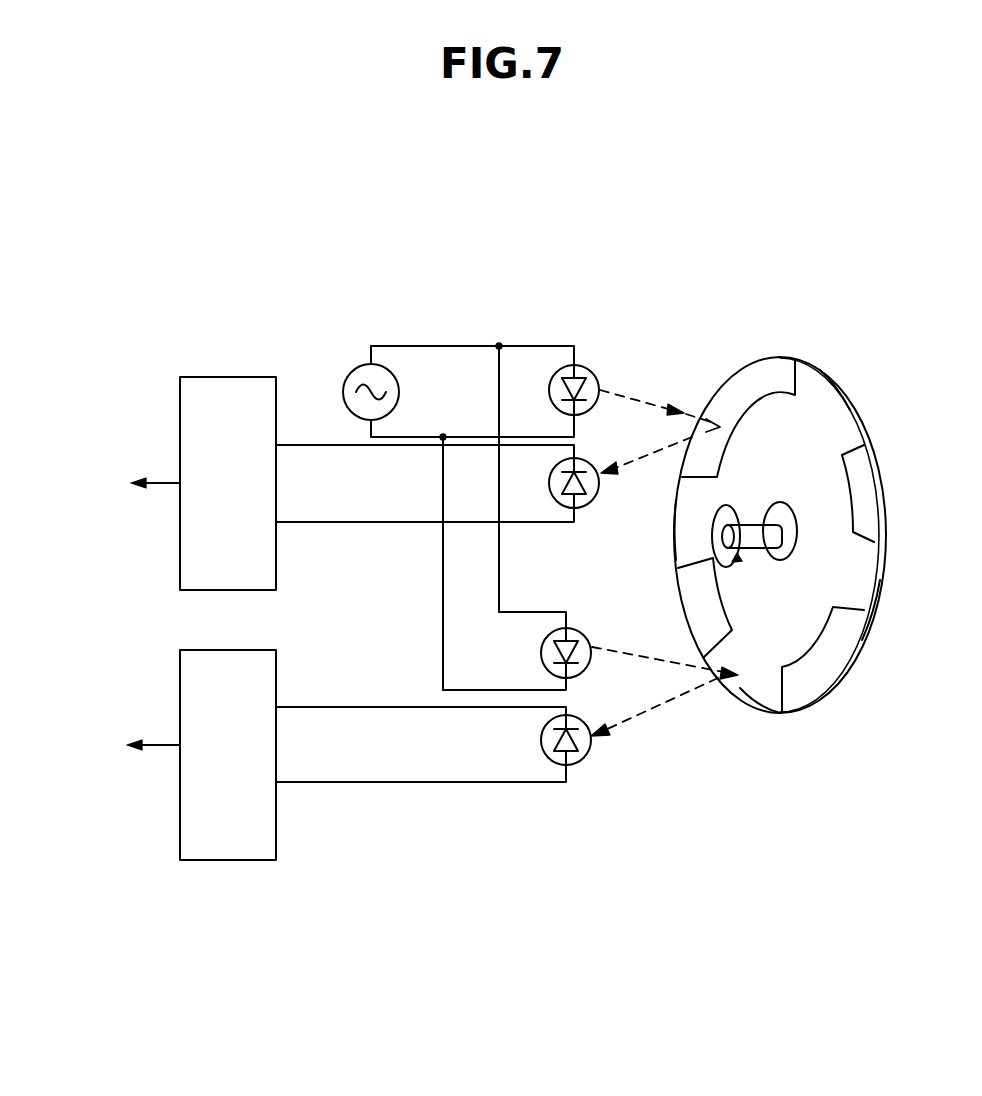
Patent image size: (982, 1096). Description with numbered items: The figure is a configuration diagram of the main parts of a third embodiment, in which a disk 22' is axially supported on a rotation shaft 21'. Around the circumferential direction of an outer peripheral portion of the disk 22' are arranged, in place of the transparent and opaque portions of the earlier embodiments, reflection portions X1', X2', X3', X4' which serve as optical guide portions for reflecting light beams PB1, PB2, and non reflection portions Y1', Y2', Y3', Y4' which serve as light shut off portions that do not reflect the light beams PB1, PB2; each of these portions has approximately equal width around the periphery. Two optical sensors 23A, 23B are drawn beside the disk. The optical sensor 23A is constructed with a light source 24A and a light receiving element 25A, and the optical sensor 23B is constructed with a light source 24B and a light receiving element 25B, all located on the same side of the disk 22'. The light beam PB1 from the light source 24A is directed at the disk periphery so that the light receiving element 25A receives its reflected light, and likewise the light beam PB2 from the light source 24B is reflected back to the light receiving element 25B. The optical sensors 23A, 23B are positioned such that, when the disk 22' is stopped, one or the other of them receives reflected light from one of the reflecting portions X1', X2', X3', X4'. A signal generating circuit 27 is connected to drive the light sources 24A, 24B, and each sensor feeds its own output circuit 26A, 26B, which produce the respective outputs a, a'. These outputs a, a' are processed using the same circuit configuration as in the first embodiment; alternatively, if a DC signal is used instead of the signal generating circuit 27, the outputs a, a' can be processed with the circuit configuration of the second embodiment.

The optical sensor 23A is at (303, 388).
The optical sensor 23B is at (362, 794).
The output circuit 26A is at (221, 377).
The output circuit 26B is at (218, 862).
The signal generating circuit 27 is at (359, 367).
The light source 24A is at (594, 380).
The light source 24B is at (541, 654).
The light receiving element 25A is at (585, 503).
The light receiving element 25B is at (577, 761).
The light beam PB1 is at (636, 386).
The light beam PB2 is at (615, 654).
The rotation shaft 21' is at (754, 505).
The disk 22' is at (818, 535).
The reflection portion X1' is at (900, 493).
The reflection portion X2' is at (839, 670).
The reflection portion X3' is at (672, 607).
The reflection portion X4' is at (746, 379).
The non reflection portion Y1' is at (922, 639).
The non reflection portion Y2' is at (757, 728).
The non reflection portion Y3' is at (648, 530).
The non reflection portion Y4' is at (860, 371).
The output a is at (155, 460).
The output a' is at (153, 718).